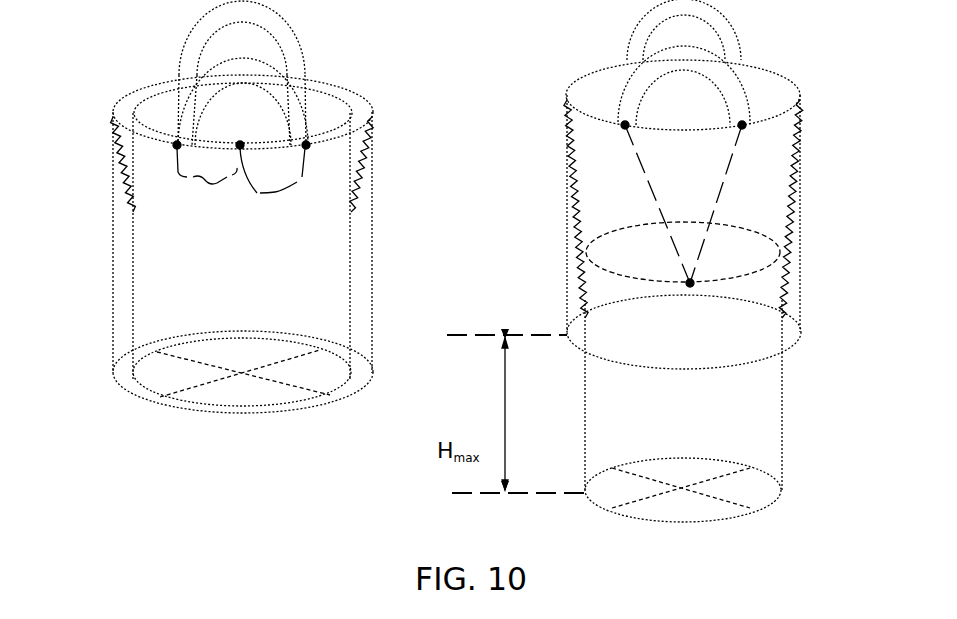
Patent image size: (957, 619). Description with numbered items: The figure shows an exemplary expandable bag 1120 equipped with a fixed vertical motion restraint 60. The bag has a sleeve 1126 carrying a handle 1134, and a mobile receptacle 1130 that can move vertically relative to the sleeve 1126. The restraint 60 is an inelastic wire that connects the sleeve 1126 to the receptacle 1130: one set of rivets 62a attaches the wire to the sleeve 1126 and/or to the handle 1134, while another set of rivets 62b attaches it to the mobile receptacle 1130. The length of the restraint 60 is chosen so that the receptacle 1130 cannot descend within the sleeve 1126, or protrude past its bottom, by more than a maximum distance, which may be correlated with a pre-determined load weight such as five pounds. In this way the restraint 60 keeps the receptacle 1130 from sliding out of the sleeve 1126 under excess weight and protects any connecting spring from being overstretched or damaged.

The expandable bag 1120 is at (218, 470).
The sleeve 1126 is at (113, 317).
The handle 1134 is at (290, 23).
The rivets 62a is at (177, 145).
The rivets 62b is at (240, 145).
The vertical motion restraint 60 is at (185, 175).
The mobile receptacle 1130 is at (782, 400).